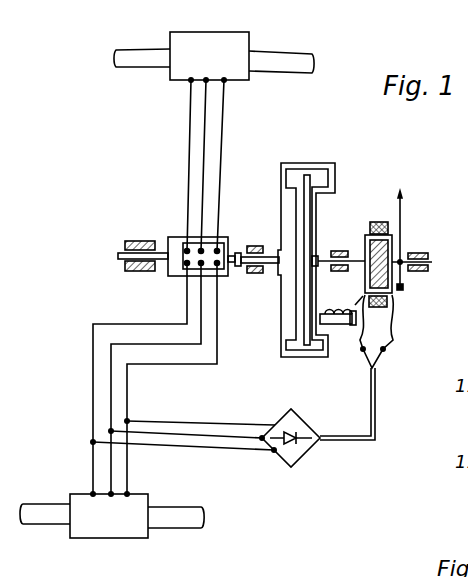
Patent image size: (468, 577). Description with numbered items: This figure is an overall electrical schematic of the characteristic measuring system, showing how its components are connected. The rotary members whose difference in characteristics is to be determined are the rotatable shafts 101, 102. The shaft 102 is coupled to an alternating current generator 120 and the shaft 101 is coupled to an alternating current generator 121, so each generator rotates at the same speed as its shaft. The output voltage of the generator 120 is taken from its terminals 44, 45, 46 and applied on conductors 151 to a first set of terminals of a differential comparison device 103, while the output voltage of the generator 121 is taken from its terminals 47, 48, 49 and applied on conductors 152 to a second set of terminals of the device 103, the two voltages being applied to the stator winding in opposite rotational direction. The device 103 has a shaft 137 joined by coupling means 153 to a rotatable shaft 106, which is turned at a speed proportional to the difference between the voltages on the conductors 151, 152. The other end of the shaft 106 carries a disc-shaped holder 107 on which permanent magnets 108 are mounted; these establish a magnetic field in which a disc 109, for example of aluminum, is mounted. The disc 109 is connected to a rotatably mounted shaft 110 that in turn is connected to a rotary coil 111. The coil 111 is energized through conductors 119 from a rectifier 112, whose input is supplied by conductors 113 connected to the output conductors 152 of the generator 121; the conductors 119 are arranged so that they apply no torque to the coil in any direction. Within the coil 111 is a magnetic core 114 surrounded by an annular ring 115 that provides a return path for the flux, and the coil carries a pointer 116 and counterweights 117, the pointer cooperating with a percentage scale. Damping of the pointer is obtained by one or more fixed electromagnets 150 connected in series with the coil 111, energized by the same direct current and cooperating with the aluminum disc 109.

The alternating current generator 120 is at (178, 43).
The rotatable shaft 102 is at (282, 67).
The terminal 44 is at (190, 82).
The terminal 45 is at (205, 82).
The terminal 46 is at (224, 82).
The conductors 151 is at (185, 153).
The differential comparison device 103 is at (178, 237).
The coupling means 153 is at (238, 266).
The shaft 137 is at (233, 270).
The rotatable shaft 106 is at (268, 256).
The permanent magnets 108 is at (311, 170).
The disc-shaped holder 107 is at (279, 320).
The disc 109 is at (311, 215).
The rotatably mounted shaft 110 is at (351, 258).
The magnetic core 114 is at (382, 280).
The annular ring 115 is at (379, 222).
The pointer 116 is at (401, 222).
The counterweights 117 is at (404, 288).
The conductors 119 is at (392, 320).
The rotary coil 111 is at (367, 270).
The fixed electromagnets 150 is at (340, 325).
The conductors 152 is at (87, 454).
The conductors 113 is at (186, 426).
The rectifier 112 is at (282, 453).
The alternating current generator 121 is at (118, 532).
The rotatable shaft 101 is at (47, 516).
The terminal 47 is at (88, 491).
The terminal 48 is at (106, 493).
The terminal 49 is at (127, 492).